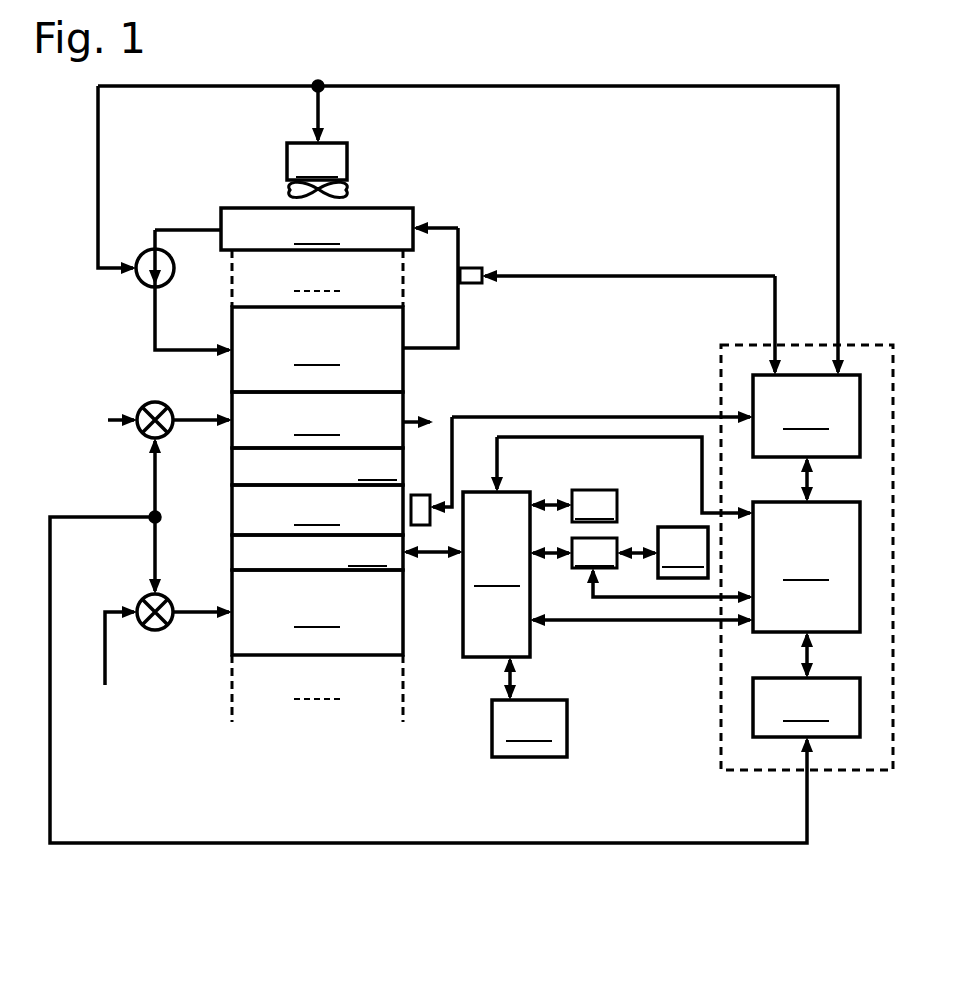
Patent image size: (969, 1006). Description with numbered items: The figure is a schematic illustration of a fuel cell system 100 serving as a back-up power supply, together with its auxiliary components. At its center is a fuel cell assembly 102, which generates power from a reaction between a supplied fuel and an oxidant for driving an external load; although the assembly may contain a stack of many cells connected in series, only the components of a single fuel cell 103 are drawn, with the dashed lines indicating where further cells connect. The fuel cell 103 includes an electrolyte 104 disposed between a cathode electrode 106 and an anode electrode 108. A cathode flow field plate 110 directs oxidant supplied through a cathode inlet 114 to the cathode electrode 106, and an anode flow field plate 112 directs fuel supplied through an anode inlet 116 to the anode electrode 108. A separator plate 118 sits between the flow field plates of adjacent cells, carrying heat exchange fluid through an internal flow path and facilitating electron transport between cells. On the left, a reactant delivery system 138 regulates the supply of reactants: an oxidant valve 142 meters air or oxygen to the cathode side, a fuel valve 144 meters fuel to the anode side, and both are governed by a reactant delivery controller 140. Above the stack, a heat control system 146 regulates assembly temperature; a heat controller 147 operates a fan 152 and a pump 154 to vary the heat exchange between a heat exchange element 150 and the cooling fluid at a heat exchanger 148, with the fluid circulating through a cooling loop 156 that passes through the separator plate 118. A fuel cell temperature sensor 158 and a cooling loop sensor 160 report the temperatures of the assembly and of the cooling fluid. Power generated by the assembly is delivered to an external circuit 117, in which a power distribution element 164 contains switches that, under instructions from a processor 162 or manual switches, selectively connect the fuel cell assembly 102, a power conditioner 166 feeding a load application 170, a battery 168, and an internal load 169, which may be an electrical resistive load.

The fuel cell system 100 is at (780, 64).
The fuel cell assembly 102 is at (678, 549).
The fuel cell 103 is at (382, 486).
The electrolyte 104 is at (317, 510).
The cathode electrode 106 is at (318, 466).
The anode electrode 108 is at (347, 552).
The cathode flow field plate 110 is at (332, 420).
The anode flow field plate 112 is at (317, 452).
The cathode inlet 114 is at (192, 416).
The anode inlet 116 is at (193, 618).
The external circuit 117 is at (625, 761).
The separator plate 118 is at (317, 514).
The reactant delivery system 138 is at (125, 543).
The reactant delivery controller 140 is at (806, 707).
The oxidant valve 142 is at (143, 404).
The fuel valve 144 is at (146, 598).
The heat control system 146 is at (476, 206).
The heat controller 147 is at (806, 416).
The heat exchanger 148 is at (386, 170).
The heat exchange element 150 is at (317, 229).
The fan 152 is at (317, 161).
The pump 154 is at (168, 282).
The cooling loop 156 is at (140, 308).
The fuel cell temperature sensor 158 is at (418, 495).
The cooling loop sensor 160 is at (470, 268).
The processor 162 is at (806, 567).
The power distribution element 164 is at (608, 547).
The power conditioner 166 is at (641, 570).
The battery 168 is at (529, 707).
The internal load 169 is at (574, 506).
The load application 170 is at (663, 552).